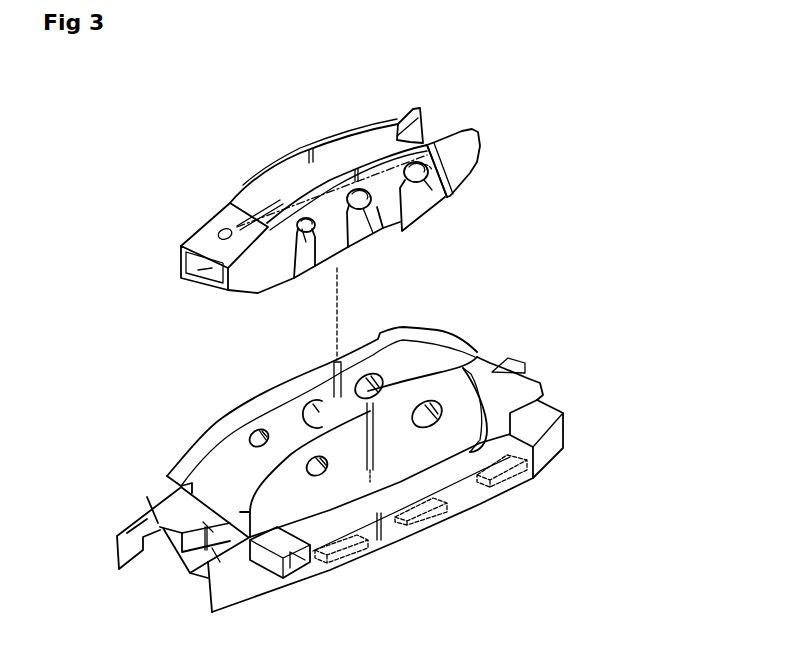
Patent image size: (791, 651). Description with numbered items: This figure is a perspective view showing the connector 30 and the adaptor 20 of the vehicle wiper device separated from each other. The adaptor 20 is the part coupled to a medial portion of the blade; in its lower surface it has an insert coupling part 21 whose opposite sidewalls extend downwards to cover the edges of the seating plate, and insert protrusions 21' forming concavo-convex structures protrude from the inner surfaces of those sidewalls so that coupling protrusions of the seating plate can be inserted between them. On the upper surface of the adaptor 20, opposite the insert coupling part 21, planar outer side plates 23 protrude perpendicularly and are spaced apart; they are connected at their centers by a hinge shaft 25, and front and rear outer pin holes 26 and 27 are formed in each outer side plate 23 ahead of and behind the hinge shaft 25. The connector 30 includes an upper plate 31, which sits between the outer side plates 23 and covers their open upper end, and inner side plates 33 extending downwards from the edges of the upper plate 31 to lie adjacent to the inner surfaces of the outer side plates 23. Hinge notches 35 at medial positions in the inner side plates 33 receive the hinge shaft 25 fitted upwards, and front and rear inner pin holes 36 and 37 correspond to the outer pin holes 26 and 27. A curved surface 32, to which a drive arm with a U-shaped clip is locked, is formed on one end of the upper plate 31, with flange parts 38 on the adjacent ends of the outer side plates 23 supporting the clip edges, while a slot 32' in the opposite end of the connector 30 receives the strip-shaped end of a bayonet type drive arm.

The adaptor 20 is at (160, 445).
The insert coupling part 21 is at (156, 555).
The insert protrusions 21' is at (421, 528).
The outer side plates 23 is at (520, 392).
The hinge shaft 25 is at (318, 413).
The front outer pin hole 26 is at (435, 420).
The rear outer pin hole 27 is at (320, 468).
The connector 30 is at (196, 197).
The upper plate 31 is at (293, 183).
The curved surface 32 is at (478, 187).
The slot 32' is at (162, 261).
The inner side plates 33 is at (350, 143).
The hinge notches 35 is at (359, 207).
The front inner pin hole 36 is at (413, 180).
The rear inner pin hole 37 is at (303, 227).
The flange parts 38 is at (468, 152).